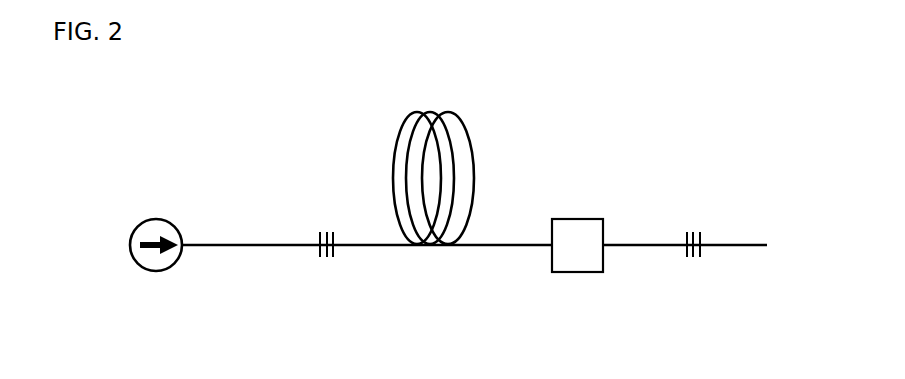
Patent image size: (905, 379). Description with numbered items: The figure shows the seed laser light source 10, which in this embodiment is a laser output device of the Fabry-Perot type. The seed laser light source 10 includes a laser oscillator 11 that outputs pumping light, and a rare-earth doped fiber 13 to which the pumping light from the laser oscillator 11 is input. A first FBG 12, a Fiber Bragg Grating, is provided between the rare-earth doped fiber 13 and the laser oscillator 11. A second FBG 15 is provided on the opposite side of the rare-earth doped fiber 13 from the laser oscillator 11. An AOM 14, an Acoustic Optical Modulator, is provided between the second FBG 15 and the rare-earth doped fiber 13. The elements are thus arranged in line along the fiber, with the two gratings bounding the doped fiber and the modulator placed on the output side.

The seed laser light source 10 is at (607, 98).
The laser oscillator 11 is at (157, 218).
The first FBG 12 is at (320, 253).
The rare-earth doped fiber 13 is at (397, 245).
The AOM 14 is at (575, 219).
The second FBG 15 is at (687, 253).